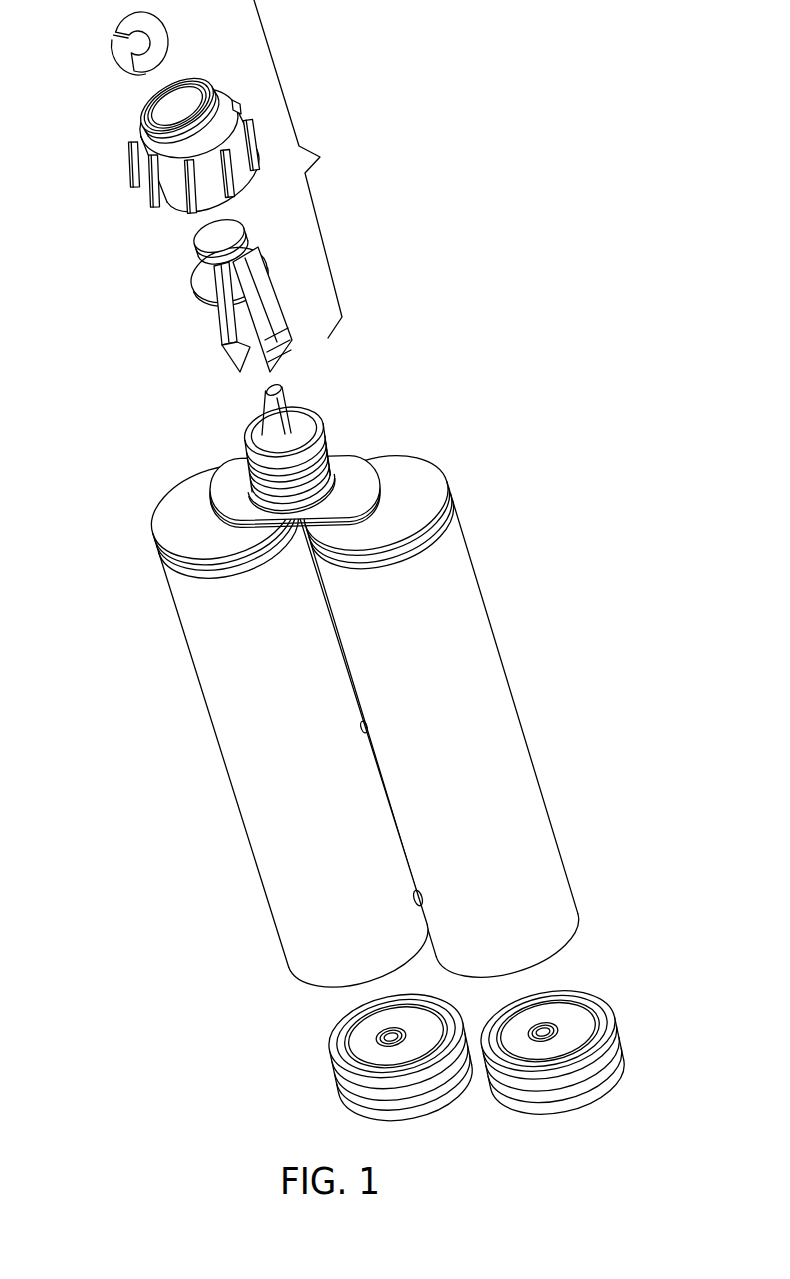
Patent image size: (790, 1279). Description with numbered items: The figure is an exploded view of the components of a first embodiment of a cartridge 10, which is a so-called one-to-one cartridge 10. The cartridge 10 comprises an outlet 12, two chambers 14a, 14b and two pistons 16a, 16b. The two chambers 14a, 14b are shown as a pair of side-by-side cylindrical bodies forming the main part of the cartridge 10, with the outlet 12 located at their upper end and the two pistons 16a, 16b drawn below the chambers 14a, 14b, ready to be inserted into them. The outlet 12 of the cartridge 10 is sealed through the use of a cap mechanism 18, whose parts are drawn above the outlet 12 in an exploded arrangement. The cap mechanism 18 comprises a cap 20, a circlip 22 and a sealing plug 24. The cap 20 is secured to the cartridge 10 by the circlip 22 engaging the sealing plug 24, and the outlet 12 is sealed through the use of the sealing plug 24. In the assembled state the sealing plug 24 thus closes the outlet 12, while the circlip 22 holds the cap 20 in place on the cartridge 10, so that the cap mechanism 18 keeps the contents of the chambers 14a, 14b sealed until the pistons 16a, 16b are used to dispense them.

The cartridge 10 is at (442, 473).
The outlet 12 is at (248, 460).
The chamber 14a is at (245, 723).
The chamber 14b is at (482, 663).
The piston 16a is at (348, 1038).
The piston 16b is at (588, 1015).
The cap mechanism 18 is at (306, 169).
The cap 20 is at (130, 157).
The circlip 22 is at (130, 61).
The sealing plug 24 is at (205, 287).